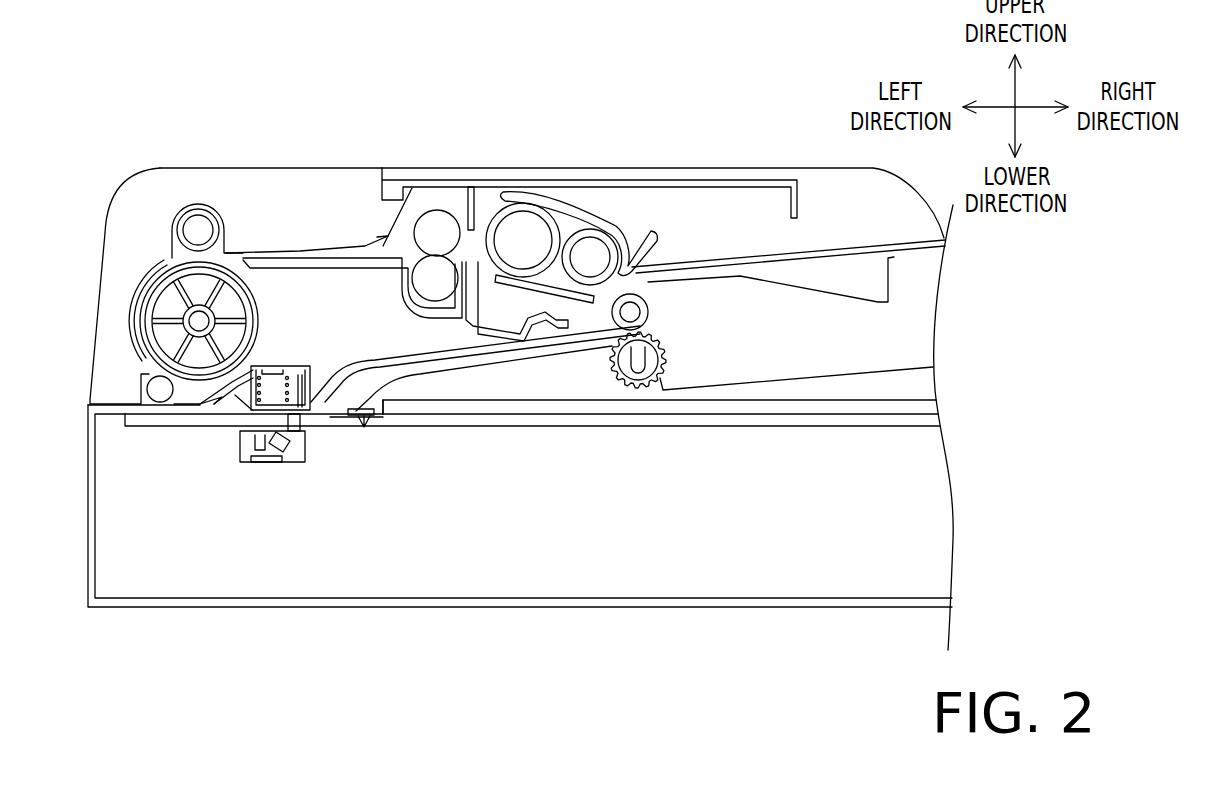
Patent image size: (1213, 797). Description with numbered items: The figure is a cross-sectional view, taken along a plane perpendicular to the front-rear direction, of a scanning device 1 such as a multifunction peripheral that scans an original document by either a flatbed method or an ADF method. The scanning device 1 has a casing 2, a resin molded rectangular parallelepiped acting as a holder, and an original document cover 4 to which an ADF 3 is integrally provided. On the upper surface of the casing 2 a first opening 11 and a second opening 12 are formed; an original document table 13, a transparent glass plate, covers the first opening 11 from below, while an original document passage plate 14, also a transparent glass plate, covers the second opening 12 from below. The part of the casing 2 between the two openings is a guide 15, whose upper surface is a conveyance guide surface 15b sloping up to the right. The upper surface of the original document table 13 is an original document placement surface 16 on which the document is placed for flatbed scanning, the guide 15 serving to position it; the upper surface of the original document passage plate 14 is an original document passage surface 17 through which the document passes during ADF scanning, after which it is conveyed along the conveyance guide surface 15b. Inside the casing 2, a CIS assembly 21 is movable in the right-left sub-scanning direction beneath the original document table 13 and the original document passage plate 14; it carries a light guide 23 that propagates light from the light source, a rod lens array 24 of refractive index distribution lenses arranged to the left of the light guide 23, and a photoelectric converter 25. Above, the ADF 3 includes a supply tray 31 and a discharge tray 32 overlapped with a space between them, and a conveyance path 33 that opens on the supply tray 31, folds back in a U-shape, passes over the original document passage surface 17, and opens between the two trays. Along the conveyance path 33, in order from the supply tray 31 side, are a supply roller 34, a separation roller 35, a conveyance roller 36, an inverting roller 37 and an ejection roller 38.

The scanning device 1 is at (632, 677).
The casing 2 is at (171, 607).
The ADF 3 is at (385, 232).
The original document cover 4 is at (272, 168).
The first opening 11 is at (386, 408).
The second opening 12 is at (243, 417).
The original document table 13 is at (503, 427).
The original document passage plate 14 is at (168, 427).
The guide 15 is at (323, 423).
The conveyance guide surface 15b is at (336, 393).
The original document placement surface 16 is at (417, 414).
The original document passage surface 17 is at (305, 397).
The CIS assembly 21 is at (288, 463).
The light guide 23 is at (298, 463).
The rod lens array 24 is at (254, 460).
The photoelectric converter 25 is at (270, 463).
The supply tray 31 is at (840, 252).
The discharge tray 32 is at (838, 373).
The conveyance path 33 is at (128, 297).
The supply roller 34 is at (595, 232).
The separation roller 35 is at (533, 206).
The conveyance roller 36 is at (449, 268).
The inverting roller 37 is at (158, 386).
The ejection roller 38 is at (662, 337).